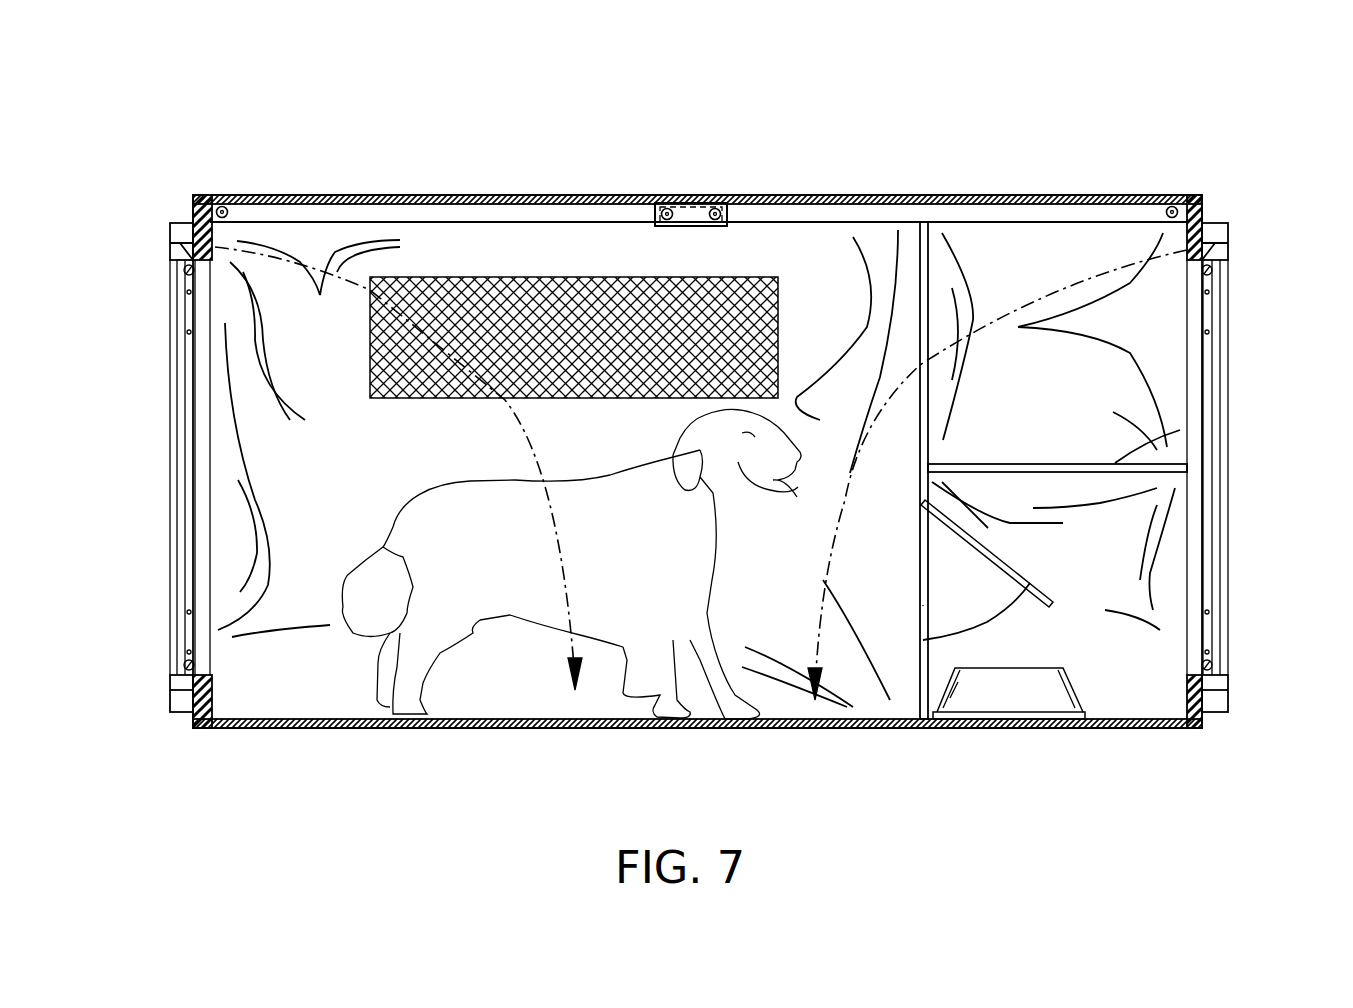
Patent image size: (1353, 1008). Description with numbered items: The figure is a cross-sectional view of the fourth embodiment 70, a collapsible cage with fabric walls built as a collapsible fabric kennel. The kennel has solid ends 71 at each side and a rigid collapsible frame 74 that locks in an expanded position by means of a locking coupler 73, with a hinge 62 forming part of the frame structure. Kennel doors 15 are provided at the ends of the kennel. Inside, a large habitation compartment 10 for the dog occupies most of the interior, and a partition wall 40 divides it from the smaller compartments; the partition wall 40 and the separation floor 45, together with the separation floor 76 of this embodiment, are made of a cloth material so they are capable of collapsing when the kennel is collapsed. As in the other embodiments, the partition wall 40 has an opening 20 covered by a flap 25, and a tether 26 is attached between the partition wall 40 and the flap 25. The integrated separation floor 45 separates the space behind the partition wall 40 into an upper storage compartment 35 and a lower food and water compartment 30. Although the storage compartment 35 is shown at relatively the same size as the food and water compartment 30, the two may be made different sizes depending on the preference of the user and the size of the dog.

The fourth embodiment 70 is at (252, 105).
The habitation compartment 10 is at (530, 240).
The kennel doors 15 is at (185, 460).
The opening 20 is at (923, 605).
The flap 25 is at (1013, 563).
The tether 26 is at (987, 622).
The food and water compartment 30 is at (1140, 603).
The storage compartment 35 is at (1028, 262).
The partition wall 40 is at (925, 700).
The integrated separation floor 45 is at (1115, 466).
The hinge 62 is at (222, 207).
The solid ends 71 is at (183, 238).
The locking coupler 73 is at (699, 204).
The collapsible frame 74 is at (905, 222).
The separation floor (fourth embodiment) 76 is at (415, 196).